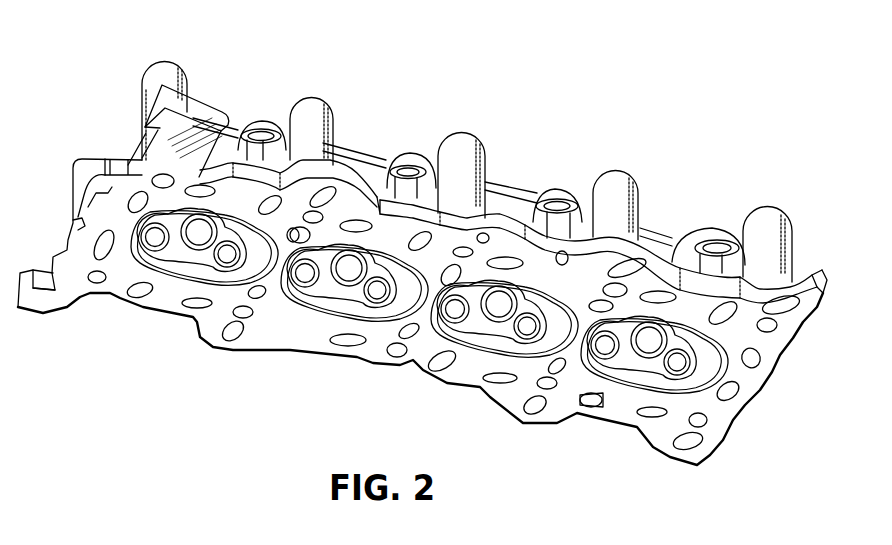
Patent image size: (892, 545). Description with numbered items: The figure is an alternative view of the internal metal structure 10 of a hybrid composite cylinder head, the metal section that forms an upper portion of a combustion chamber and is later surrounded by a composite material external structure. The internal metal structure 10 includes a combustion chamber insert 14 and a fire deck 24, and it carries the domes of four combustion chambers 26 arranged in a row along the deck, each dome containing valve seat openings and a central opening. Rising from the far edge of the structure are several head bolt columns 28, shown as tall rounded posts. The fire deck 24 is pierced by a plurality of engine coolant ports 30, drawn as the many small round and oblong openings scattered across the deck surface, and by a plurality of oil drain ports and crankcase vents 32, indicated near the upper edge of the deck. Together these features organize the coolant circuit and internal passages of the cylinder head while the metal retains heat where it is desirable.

The internal metal structure 10 is at (421, 237).
The combustion chamber insert 14 is at (57, 318).
The fire deck 24 is at (413, 360).
The combustion chambers 26 is at (207, 255).
The head bolt columns 28 is at (315, 100).
The engine coolant ports 30 is at (643, 433).
The oil drain ports and crankcase vents 32 is at (773, 297).